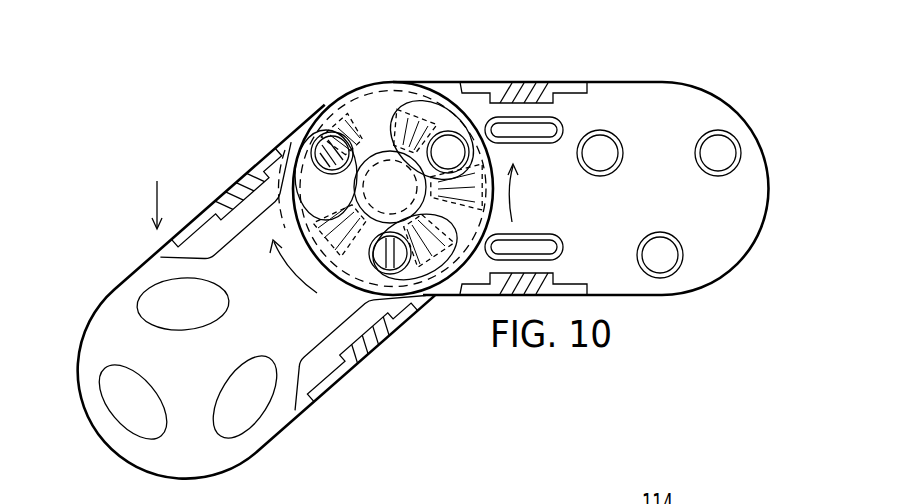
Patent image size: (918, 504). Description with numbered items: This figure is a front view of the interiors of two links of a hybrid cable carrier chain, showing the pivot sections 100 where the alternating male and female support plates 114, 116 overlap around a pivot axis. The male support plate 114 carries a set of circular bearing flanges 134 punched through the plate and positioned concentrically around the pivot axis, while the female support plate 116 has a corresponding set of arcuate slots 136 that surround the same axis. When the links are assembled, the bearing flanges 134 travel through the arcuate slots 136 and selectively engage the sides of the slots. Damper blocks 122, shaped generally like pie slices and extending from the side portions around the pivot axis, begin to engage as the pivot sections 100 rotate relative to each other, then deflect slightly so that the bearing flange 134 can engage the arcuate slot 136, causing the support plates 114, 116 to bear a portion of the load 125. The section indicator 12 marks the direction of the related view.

The pivot section 100 is at (417, 252).
The rotating joint / section indicator 12 is at (372, 78).
The male support plate 114 is at (687, 93).
The female support plate 116 is at (103, 337).
The damper block 122 is at (400, 503).
The load 125 is at (157, 198).
The bearing flange 134 is at (735, 131).
The arcuate slot 136 is at (157, 297).